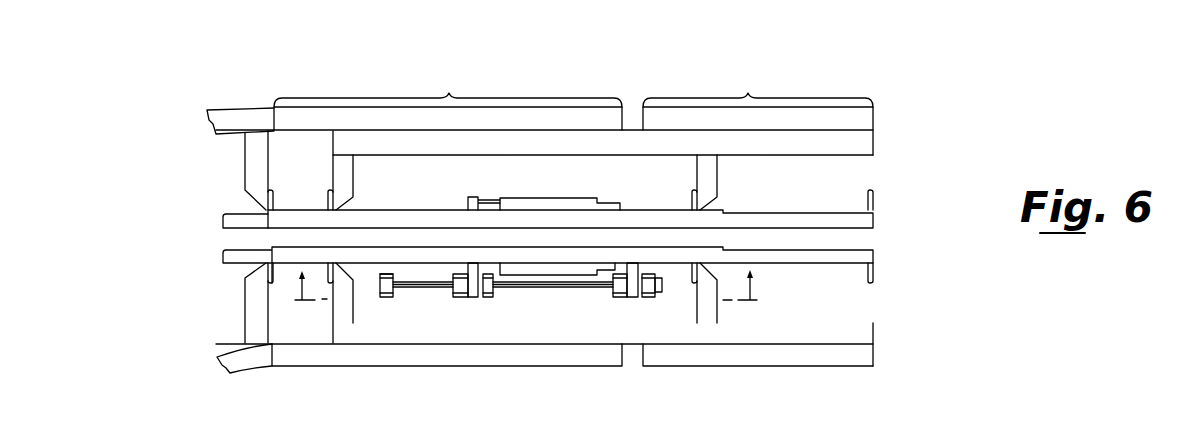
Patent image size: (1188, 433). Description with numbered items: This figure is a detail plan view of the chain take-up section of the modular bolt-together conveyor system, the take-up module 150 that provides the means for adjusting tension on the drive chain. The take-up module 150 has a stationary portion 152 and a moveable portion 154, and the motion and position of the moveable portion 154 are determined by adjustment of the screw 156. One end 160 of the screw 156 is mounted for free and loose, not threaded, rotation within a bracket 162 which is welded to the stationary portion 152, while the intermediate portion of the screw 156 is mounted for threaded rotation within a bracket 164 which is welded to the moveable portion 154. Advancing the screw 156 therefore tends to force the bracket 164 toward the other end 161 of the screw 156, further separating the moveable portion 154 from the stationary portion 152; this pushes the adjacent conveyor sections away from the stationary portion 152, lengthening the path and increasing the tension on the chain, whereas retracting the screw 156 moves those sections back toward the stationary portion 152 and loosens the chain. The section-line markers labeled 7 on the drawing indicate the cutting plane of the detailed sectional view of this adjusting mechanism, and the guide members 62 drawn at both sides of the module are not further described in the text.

The take-up module 150 is at (644, 78).
The stationary portion 152 is at (747, 98).
The moveable portion 154 is at (443, 99).
The guide bracket 62 is at (345, 175).
The screw 156 is at (425, 288).
The one end of screw 160 is at (662, 285).
The other end of screw 161 is at (380, 281).
The bracket 162 is at (640, 297).
The bracket 164 is at (473, 297).
The section line 7 is at (529, 282).